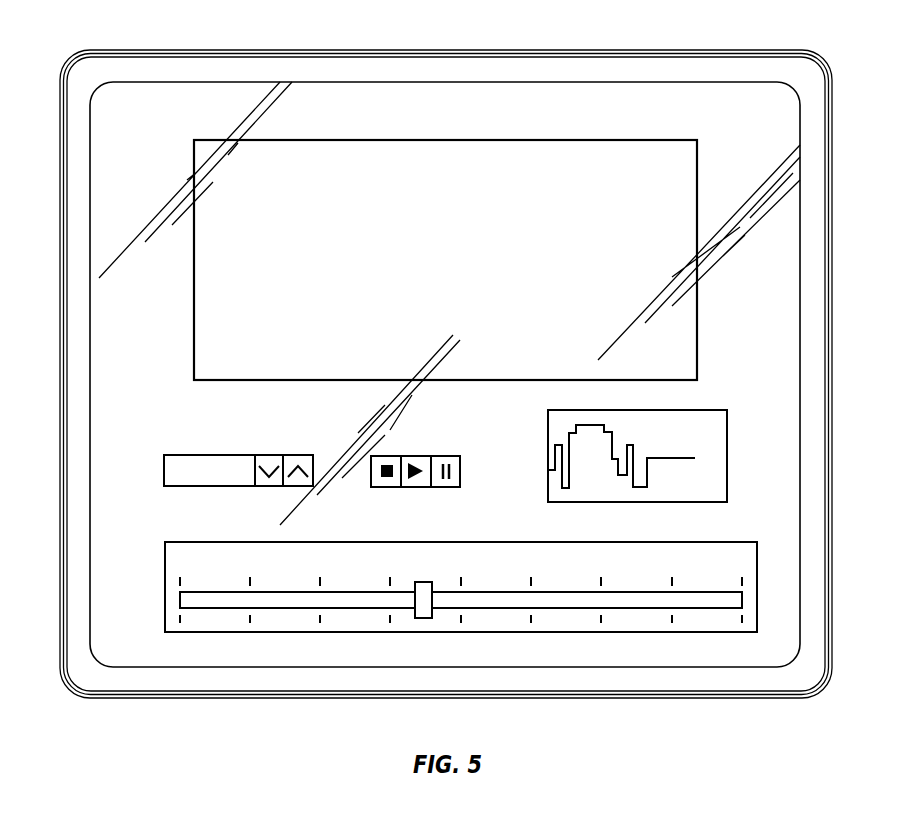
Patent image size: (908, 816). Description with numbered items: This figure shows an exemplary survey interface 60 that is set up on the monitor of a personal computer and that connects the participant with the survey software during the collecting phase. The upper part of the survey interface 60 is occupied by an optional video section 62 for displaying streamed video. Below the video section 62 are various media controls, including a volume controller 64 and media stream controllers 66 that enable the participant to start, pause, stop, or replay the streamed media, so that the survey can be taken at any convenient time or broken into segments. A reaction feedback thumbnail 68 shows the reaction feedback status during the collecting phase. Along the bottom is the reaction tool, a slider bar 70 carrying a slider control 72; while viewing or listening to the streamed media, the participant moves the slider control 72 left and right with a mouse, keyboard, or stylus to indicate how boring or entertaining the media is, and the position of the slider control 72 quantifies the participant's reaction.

The survey interface 60 is at (722, 122).
The video section 62 is at (518, 140).
The volume controller 64 is at (195, 455).
The media stream controllers 66 is at (422, 444).
The reaction feedback thumbnail 68 is at (697, 410).
The slider bar 70 is at (165, 563).
The slider control 72 is at (423, 582).